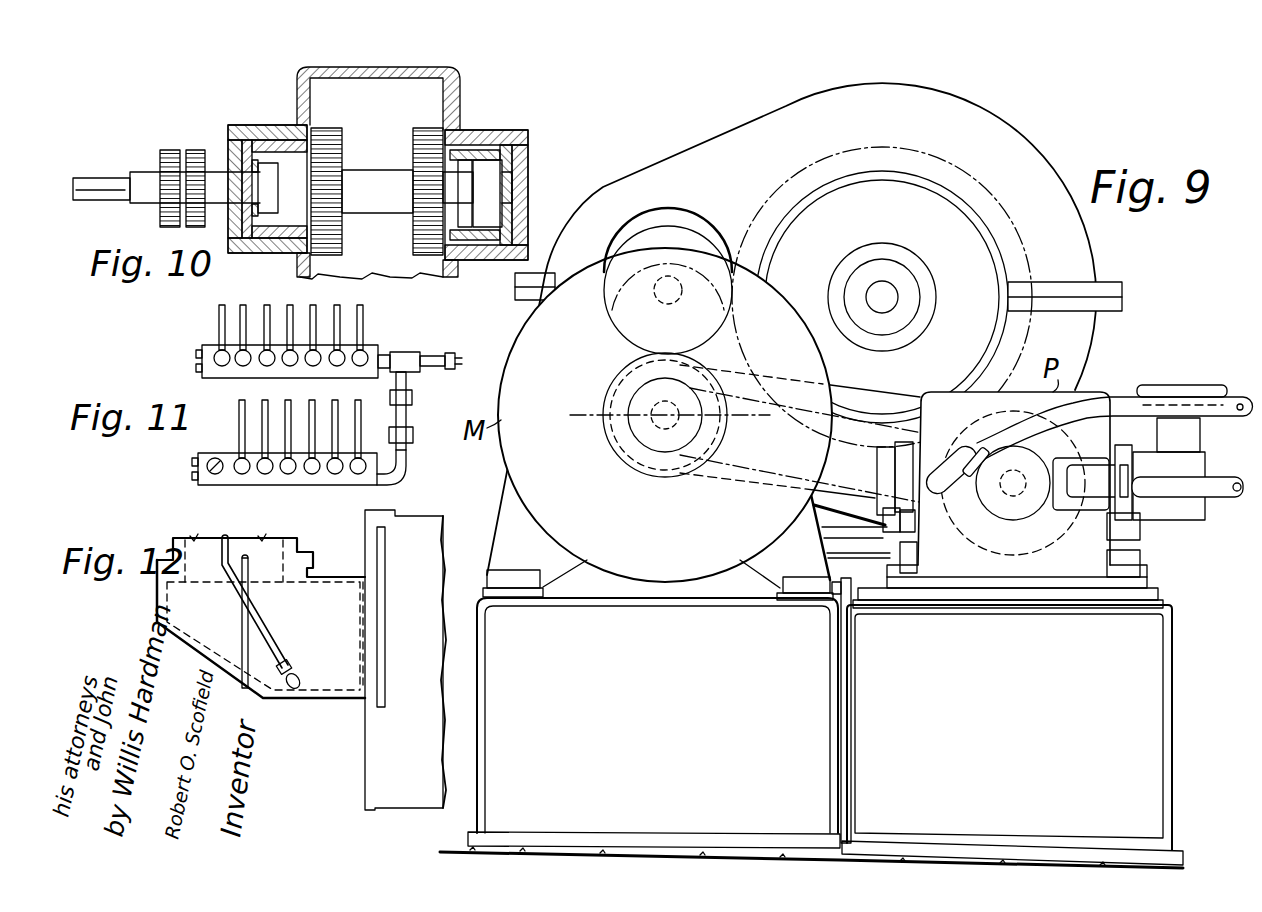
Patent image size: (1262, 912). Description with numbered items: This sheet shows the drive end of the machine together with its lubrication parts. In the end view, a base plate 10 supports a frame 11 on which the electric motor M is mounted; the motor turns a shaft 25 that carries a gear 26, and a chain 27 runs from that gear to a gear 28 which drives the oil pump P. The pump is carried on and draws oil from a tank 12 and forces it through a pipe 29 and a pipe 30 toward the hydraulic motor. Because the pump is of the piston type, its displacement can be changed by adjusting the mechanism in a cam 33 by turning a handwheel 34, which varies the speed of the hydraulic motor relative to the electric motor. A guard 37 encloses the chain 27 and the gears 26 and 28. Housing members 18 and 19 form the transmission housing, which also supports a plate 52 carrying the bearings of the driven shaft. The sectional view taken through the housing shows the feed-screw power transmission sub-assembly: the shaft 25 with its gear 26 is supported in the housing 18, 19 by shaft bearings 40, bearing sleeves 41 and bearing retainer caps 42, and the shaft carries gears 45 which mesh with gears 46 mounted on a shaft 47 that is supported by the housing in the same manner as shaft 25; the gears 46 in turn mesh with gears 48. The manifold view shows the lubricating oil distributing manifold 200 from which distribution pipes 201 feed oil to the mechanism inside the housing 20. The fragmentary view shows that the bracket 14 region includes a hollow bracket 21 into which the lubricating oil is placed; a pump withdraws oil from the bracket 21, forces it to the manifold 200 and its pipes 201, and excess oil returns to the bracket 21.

In FIG. 9, the base plate 10 is at (570, 400).
In FIG. 9, the frame 11 is at (478, 612).
In FIG. 9, the tank 12 is at (1160, 688).
In FIG. 12, the bracket 14 is at (365, 785).
In FIG. 9, the transmission housing member 18 is at (1097, 330).
In FIG. 10, the transmission housing member 18 is at (460, 77).
In FIG. 9, the transmission housing member 19 is at (1097, 255).
In FIG. 12, the housing 20 is at (300, 540).
In FIG. 12, the bracket 21 is at (313, 708).
In FIG. 9, the shaft 25 is at (655, 425).
In FIG. 10, the shaft 25 is at (140, 176).
In FIG. 9, the gear 26 is at (712, 440).
In FIG. 10, the gear 26 is at (196, 150).
In FIG. 9, the chain 27 is at (870, 417).
In FIG. 9, the gear 28 is at (962, 500).
In FIG. 9, the pipe 29 is at (1122, 397).
In FIG. 9, the pipe 30 is at (1220, 498).
In FIG. 9, the cam 33 is at (1178, 508).
In FIG. 9, the handwheel 34 is at (1213, 391).
In FIG. 9, the guard 37 is at (865, 376).
In FIG. 10, the shaft bearings 40 is at (292, 128).
In FIG. 10, the bearing sleeves 41 is at (252, 125).
In FIG. 10, the bearing retainer caps 42 is at (237, 126).
In FIG. 9, the gears 45 is at (607, 397).
In FIG. 10, the gears 45 is at (412, 132).
In FIG. 9, the gears 46 is at (606, 312).
In FIG. 9, the shaft 47 is at (655, 285).
In FIG. 9, the gears 48 is at (880, 132).
In FIG. 9, the plate 52 is at (890, 243).
In FIG. 11, the manifold 200 is at (386, 350).
In FIG. 11, the distribution pipes 201 is at (218, 325).